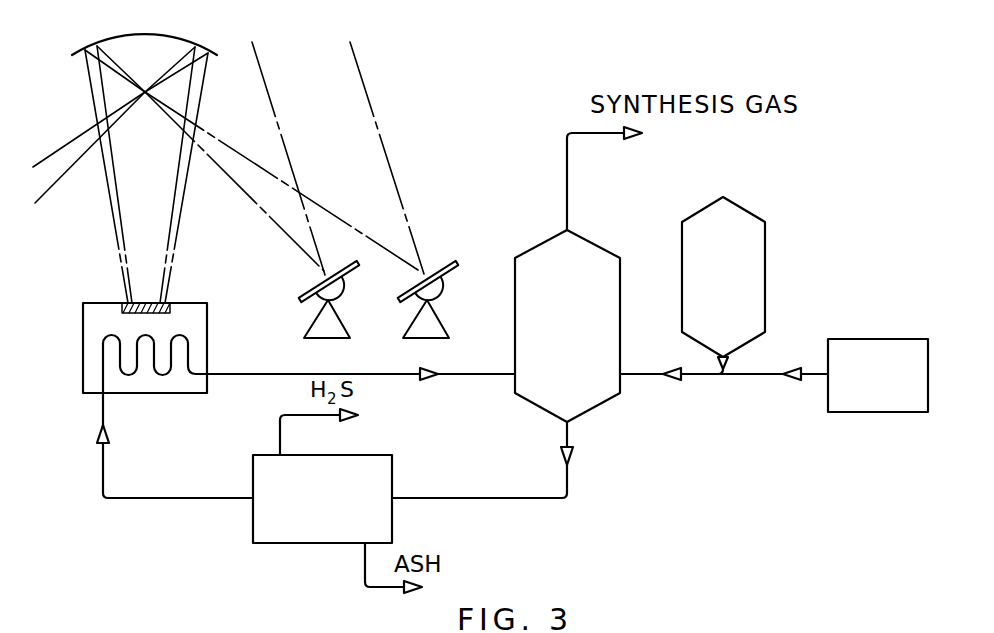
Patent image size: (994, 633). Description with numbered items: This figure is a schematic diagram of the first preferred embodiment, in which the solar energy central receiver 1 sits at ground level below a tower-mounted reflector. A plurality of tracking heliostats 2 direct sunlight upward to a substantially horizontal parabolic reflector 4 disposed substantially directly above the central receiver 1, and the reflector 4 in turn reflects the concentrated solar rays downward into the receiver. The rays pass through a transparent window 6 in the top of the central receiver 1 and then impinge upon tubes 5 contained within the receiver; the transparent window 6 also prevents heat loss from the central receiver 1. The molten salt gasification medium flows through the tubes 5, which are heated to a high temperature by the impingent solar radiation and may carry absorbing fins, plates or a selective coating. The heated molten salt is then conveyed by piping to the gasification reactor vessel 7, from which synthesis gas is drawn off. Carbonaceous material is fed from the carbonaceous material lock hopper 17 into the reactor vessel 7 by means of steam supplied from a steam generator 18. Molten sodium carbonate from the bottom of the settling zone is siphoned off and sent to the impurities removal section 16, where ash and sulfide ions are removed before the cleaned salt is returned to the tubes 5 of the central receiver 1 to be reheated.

The central receiver 1 is at (83, 328).
The tracking heliostats 2 is at (338, 312).
The parabolic reflector 4 is at (110, 33).
The tubes 5 is at (188, 346).
The transparent window 6 is at (170, 307).
The gasification reactor vessel 7 is at (597, 245).
The impurities removal section 16 is at (253, 513).
The carbonaceous material lock hopper 17 is at (750, 208).
The steam generator 18 is at (875, 339).